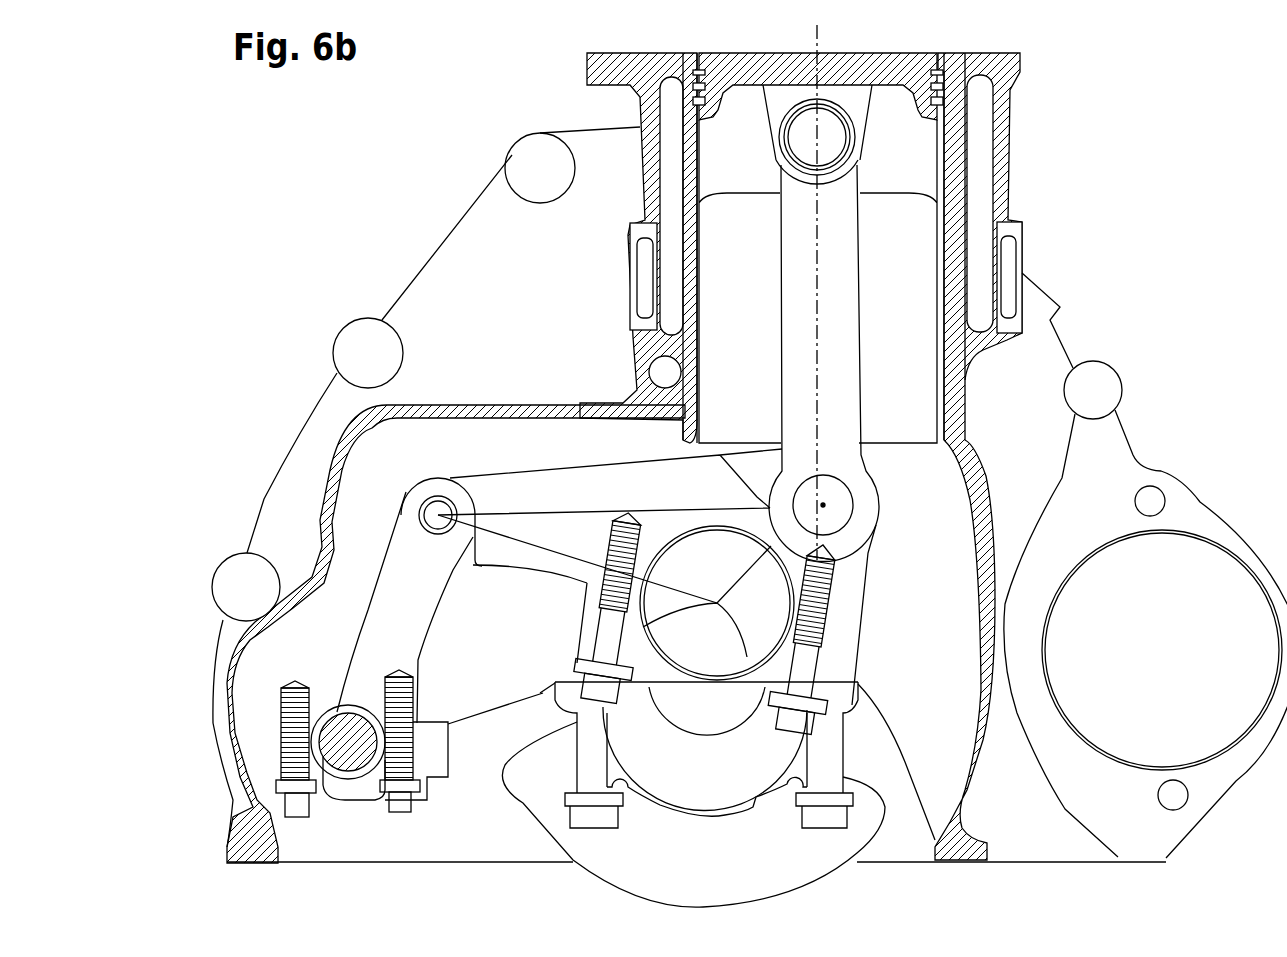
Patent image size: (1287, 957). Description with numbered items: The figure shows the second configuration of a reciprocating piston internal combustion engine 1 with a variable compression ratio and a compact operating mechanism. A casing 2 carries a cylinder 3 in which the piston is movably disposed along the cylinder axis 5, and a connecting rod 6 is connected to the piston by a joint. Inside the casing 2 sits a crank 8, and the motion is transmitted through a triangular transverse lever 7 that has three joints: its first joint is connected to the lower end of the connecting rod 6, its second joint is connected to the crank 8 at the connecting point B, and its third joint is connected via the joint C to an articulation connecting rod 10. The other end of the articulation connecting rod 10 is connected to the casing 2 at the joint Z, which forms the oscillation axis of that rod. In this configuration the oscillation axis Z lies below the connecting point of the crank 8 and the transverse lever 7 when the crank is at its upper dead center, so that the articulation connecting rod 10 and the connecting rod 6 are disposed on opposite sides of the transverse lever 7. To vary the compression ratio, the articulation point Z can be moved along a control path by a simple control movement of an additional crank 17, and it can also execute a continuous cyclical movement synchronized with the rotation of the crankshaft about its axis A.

The reciprocating piston internal combustion engine 1 is at (440, 190).
The casing 2 is at (1020, 148).
The cylinder 3 is at (950, 290).
The cylinder axis 5 is at (818, 262).
The connecting rod 6 is at (847, 368).
The triangular transverse lever 7 is at (522, 498).
The crank 8 is at (760, 593).
The articulation connecting rod 10 is at (397, 583).
The additional crank 17 is at (320, 799).
The crankshaft axis A is at (773, 653).
The crank pin axis B is at (875, 523).
The joint C is at (425, 503).
The joint Z is at (350, 757).